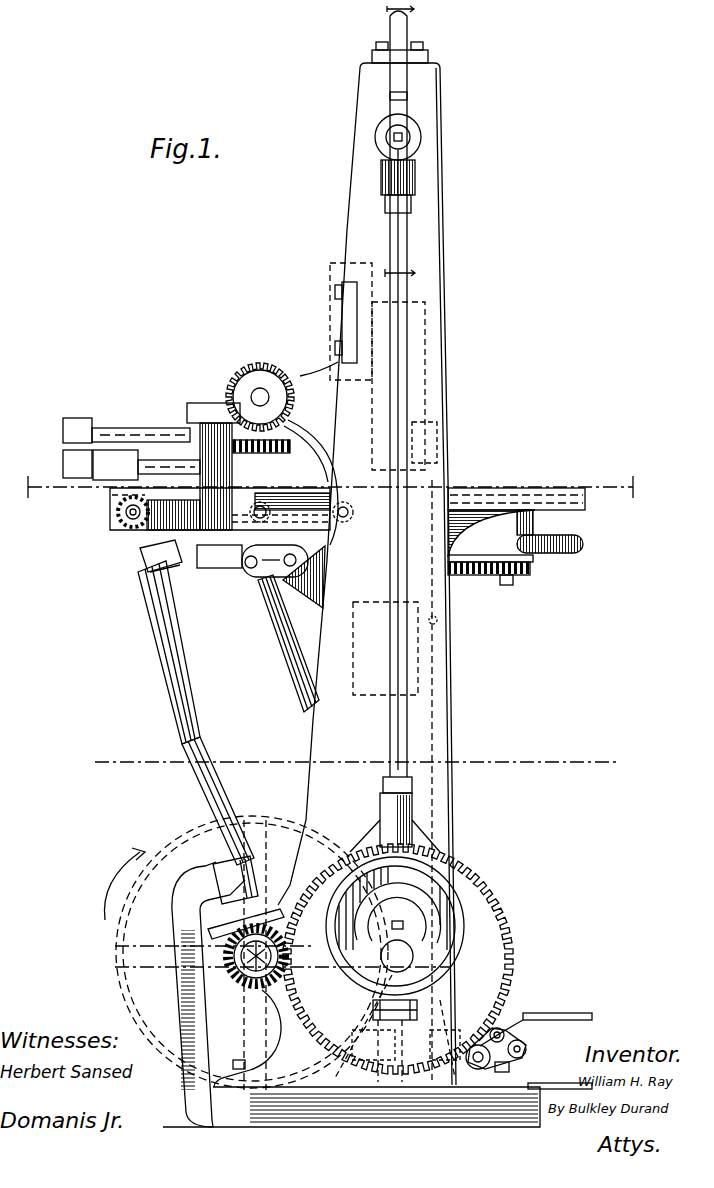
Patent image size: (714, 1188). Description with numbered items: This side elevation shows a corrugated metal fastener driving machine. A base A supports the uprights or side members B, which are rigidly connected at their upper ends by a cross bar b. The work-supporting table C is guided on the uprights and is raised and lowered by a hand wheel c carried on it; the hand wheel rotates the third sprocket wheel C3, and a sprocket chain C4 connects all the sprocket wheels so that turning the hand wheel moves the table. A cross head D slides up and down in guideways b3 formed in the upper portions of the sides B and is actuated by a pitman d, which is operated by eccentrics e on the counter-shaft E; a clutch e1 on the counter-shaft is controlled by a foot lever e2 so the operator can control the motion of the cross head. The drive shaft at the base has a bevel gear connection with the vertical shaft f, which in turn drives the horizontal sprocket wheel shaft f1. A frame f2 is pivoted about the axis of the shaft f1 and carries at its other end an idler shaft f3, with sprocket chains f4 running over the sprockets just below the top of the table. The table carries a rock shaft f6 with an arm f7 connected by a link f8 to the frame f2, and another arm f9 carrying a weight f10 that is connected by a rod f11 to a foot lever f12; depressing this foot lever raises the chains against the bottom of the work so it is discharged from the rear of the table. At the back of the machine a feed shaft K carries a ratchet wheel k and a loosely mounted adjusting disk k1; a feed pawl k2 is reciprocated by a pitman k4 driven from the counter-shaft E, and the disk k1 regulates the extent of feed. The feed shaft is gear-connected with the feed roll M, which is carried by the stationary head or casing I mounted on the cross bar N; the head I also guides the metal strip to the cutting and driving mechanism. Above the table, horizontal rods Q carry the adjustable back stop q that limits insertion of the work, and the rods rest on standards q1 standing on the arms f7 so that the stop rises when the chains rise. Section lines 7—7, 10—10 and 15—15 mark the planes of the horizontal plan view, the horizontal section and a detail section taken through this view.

The base A is at (372, 1100).
The uprights or side members B is at (448, 244).
The cross bar b is at (410, 28).
The guideways b3 is at (407, 101).
The table C is at (490, 498).
The hand wheel c is at (583, 545).
The third sprocket wheel C3 is at (515, 579).
The sprocket chain C4 is at (478, 577).
The cross head D is at (395, 107).
The pitman d is at (400, 659).
The counter-shaft E is at (407, 953).
The eccentrics e is at (418, 903).
The clutch e1 is at (380, 994).
The foot lever e2 is at (512, 1054).
The vertically disposed shaft f is at (207, 748).
The horizontal sprocket wheel shaft f1 is at (128, 516).
The frame f2 is at (150, 550).
The shaft f3 is at (342, 522).
The sprocket chains f4 is at (170, 567).
The rock shaft f6 is at (270, 596).
The arm f7 is at (210, 562).
The link f8 is at (250, 572).
The arm f9 is at (318, 592).
The weight f10 is at (366, 697).
The rod f11 is at (437, 750).
The foot lever f12 is at (587, 988).
The head or casing I is at (428, 402).
The feed shaft K is at (261, 392).
The ratchet wheel k is at (261, 362).
The rotatable disk or wheel k1 is at (283, 366).
The feed pawl k2 is at (240, 385).
The pitman k4 is at (302, 664).
The feed roll M is at (280, 440).
The cross bar N is at (345, 329).
The rods Q is at (306, 452).
The back stop or abutment q is at (121, 468).
The standards q1 is at (165, 464).
The section line 7— 7 is at (358, 763).
The section line 10— 10 is at (331, 487).
The section line 15— 15 is at (411, 143).